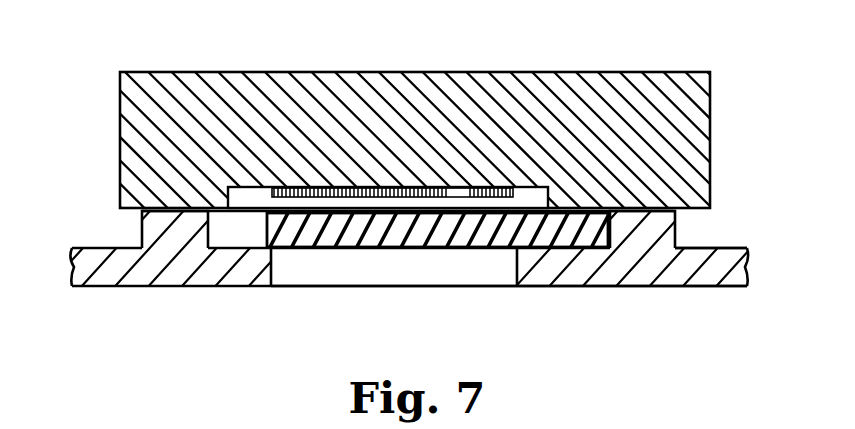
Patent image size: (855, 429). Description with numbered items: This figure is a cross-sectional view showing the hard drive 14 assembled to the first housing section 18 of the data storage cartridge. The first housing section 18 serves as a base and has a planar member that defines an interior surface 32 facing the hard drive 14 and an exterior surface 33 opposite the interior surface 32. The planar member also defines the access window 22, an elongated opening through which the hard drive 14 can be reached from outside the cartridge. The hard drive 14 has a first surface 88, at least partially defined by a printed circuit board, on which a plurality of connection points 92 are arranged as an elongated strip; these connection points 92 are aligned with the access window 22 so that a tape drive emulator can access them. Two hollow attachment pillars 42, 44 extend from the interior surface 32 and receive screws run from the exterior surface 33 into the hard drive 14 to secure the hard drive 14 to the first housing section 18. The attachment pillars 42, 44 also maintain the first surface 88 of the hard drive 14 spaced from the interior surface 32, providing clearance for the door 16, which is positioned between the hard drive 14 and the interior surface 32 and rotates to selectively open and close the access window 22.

The hard drive 14 is at (718, 100).
The door 16 is at (425, 264).
The first housing section 18 is at (705, 308).
The access window 22 is at (318, 268).
The interior surface 32 is at (677, 245).
The exterior surface 33 is at (562, 287).
The attachment pillar 42 is at (663, 227).
The attachment pillar 44 is at (178, 236).
The first surface 88 is at (128, 212).
The connection point 92 is at (351, 188).